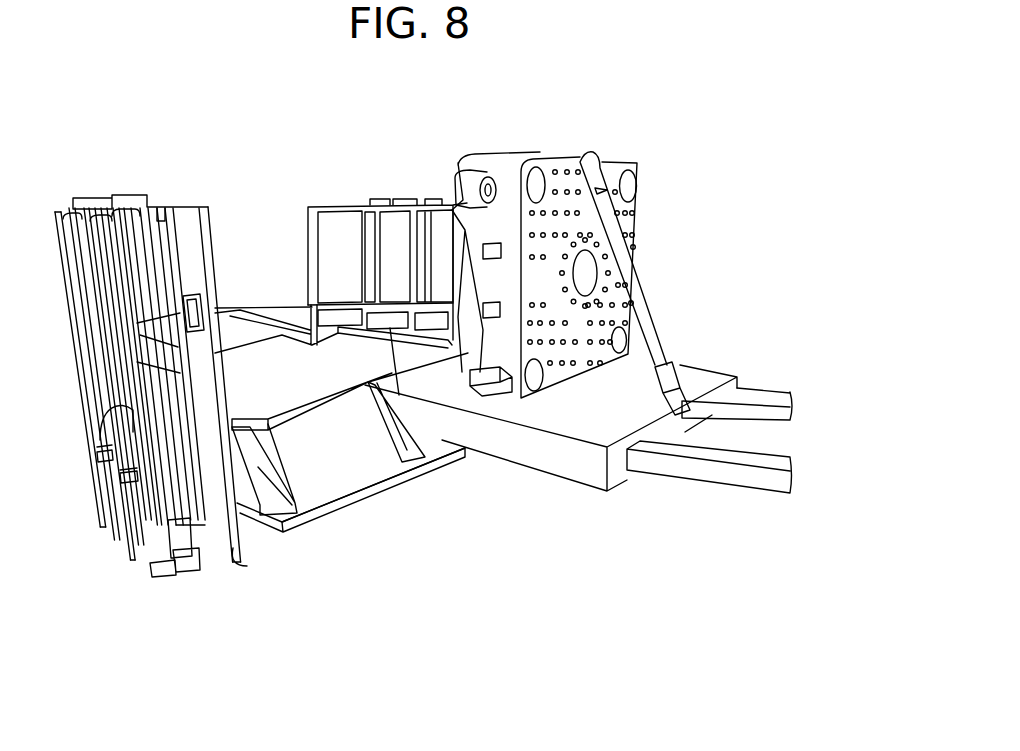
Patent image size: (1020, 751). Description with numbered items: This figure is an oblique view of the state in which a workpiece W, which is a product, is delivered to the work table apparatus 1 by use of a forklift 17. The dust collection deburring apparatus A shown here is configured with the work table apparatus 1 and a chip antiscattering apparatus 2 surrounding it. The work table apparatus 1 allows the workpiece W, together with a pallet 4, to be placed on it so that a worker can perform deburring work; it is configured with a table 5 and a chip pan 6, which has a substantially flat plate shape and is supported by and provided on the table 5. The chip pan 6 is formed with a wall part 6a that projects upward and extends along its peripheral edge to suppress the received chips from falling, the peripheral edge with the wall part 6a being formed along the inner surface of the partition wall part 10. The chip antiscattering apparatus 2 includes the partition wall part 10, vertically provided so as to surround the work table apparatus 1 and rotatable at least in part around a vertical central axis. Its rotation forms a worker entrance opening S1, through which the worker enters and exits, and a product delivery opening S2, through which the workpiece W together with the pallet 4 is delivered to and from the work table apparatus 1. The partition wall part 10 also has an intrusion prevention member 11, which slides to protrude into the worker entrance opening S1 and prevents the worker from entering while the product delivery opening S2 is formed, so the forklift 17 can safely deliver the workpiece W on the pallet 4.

The worker entrance opening S1 is at (232, 228).
The product delivery opening S2 is at (409, 515).
The dust collection deburring apparatus A is at (433, 170).
The workpiece W is at (641, 160).
The work table apparatus 1 is at (320, 403).
The chip antiscattering apparatus 2 is at (358, 200).
The pallet 4 is at (550, 463).
The table 5 is at (351, 519).
The chip pan 6 is at (307, 445).
The wall part 6a is at (256, 522).
The partition wall part 10 is at (402, 198).
The intrusion prevention member 11 is at (263, 298).
The forklift 17 is at (720, 473).